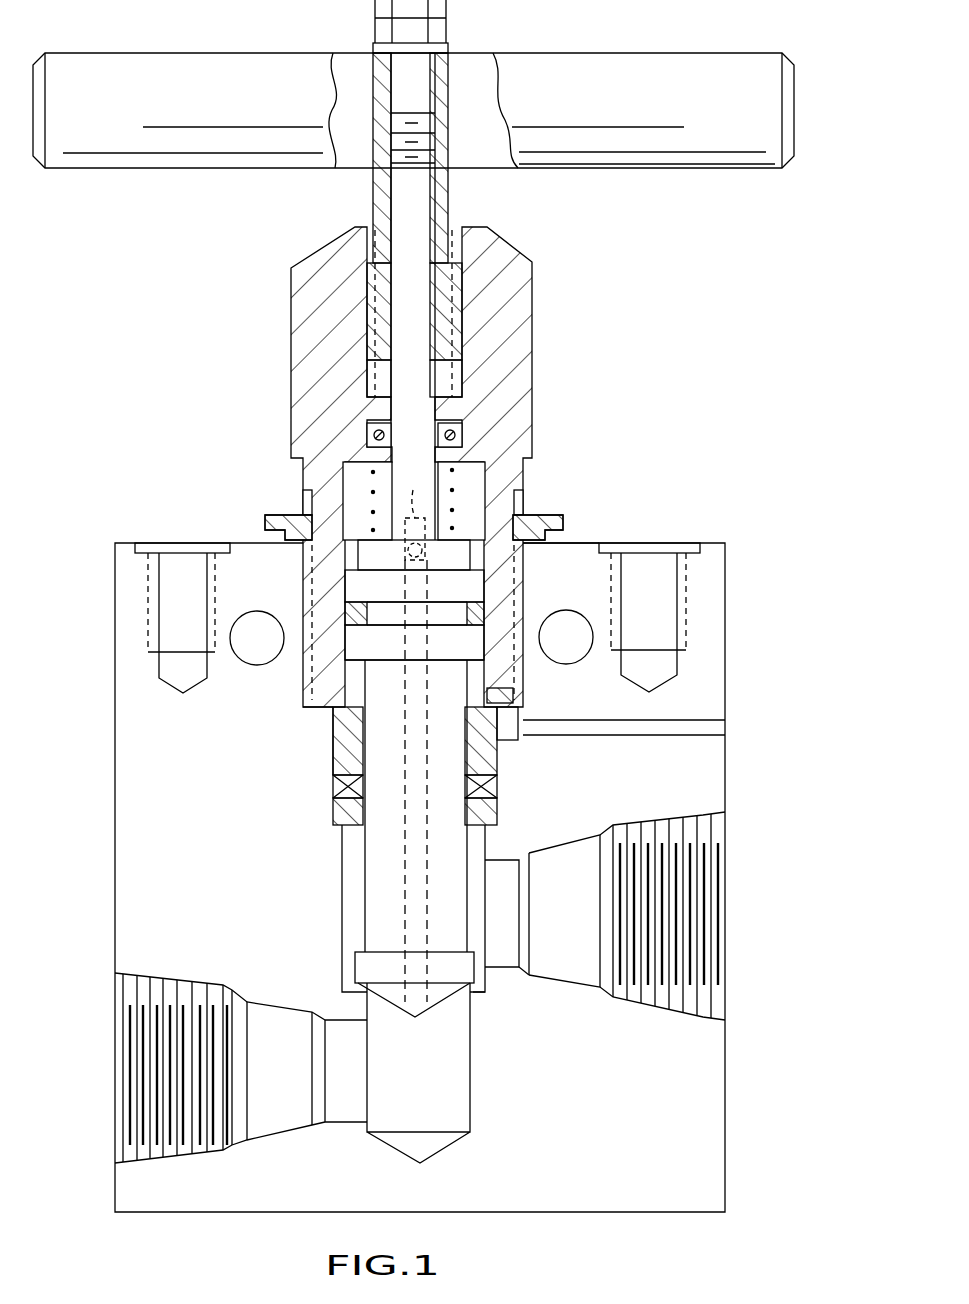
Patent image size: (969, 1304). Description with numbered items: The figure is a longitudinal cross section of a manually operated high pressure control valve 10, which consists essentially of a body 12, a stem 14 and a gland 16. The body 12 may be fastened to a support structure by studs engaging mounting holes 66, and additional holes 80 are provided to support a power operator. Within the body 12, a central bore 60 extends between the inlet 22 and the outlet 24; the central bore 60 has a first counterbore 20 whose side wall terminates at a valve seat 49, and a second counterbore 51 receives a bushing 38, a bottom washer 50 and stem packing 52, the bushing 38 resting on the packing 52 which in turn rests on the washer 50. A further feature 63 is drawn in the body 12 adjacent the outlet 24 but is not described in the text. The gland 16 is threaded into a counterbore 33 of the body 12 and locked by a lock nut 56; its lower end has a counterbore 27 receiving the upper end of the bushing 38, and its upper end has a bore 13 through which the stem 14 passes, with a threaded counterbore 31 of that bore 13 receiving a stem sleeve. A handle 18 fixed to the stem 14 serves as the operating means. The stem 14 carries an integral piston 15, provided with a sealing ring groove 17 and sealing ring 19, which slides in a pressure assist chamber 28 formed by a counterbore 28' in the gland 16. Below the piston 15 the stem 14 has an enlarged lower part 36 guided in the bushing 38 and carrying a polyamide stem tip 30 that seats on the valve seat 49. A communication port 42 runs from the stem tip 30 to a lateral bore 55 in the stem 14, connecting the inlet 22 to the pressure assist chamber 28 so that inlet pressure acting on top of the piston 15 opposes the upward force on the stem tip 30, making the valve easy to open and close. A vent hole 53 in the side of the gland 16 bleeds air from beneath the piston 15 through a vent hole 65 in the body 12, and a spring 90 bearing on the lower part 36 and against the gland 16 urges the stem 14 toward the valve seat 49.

The high pressure control valve 10 is at (586, 22).
The body 12 is at (722, 537).
The bore 13 is at (440, 408).
The stem 14 is at (430, 212).
The piston 15 is at (484, 585).
The gland 16 is at (533, 378).
The sealing ring groove 17 is at (390, 630).
The handle 18 is at (152, 53).
The sealing ring 19 is at (345, 610).
The first counterbore 20 is at (348, 880).
The inlet 22 is at (300, 1088).
The outlet 24 is at (722, 845).
The counterbore 27 is at (340, 722).
The pressure assist chamber 28 is at (452, 469).
The counterbore 28' is at (532, 492).
The stem tip 30 is at (448, 1000).
The threaded counterbore 31 is at (458, 378).
The counterbore 33 is at (518, 545).
The lower part 36 is at (378, 920).
The bushing 38 is at (492, 760).
The communication port 42 is at (433, 908).
The valve seat 49 is at (487, 992).
The bottom washer 50 is at (345, 815).
The second counterbore 51 is at (497, 812).
The stem packing 52 is at (333, 786).
The vent hole 53 is at (513, 695).
The lateral bore 55 is at (411, 507).
The lock nut 56 is at (275, 522).
The central bore 60 is at (470, 1098).
The bore 63 is at (487, 848).
The vent hole 65 is at (710, 728).
The mounting holes 66 is at (252, 611).
The holes 80 is at (160, 610).
The spring 90 is at (365, 490).